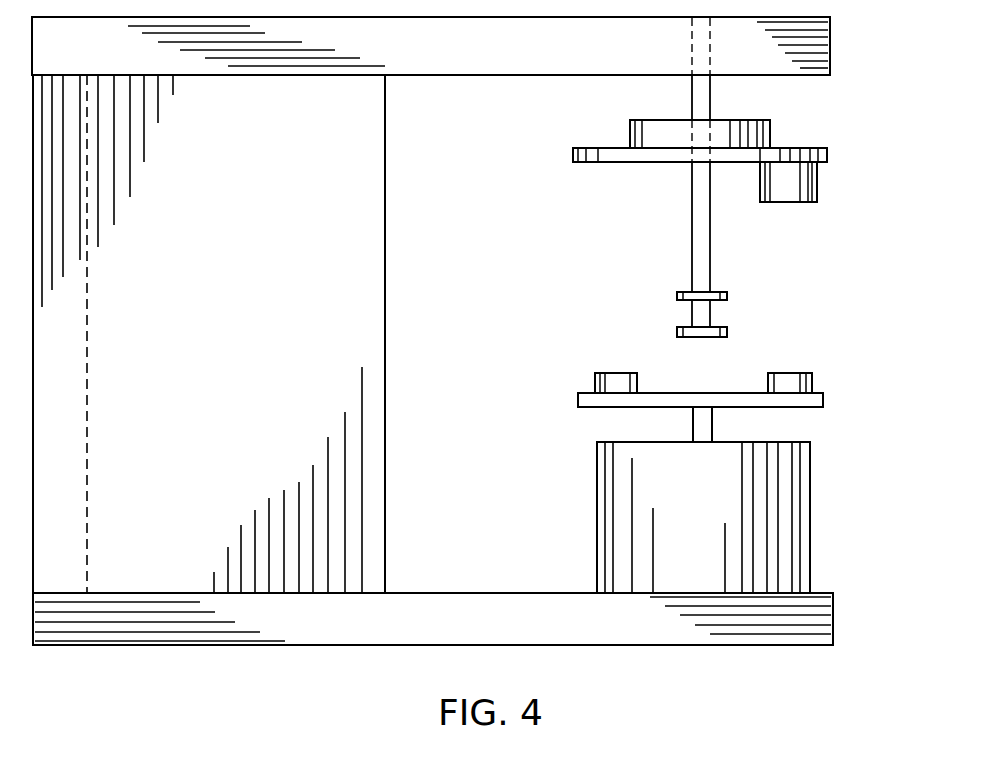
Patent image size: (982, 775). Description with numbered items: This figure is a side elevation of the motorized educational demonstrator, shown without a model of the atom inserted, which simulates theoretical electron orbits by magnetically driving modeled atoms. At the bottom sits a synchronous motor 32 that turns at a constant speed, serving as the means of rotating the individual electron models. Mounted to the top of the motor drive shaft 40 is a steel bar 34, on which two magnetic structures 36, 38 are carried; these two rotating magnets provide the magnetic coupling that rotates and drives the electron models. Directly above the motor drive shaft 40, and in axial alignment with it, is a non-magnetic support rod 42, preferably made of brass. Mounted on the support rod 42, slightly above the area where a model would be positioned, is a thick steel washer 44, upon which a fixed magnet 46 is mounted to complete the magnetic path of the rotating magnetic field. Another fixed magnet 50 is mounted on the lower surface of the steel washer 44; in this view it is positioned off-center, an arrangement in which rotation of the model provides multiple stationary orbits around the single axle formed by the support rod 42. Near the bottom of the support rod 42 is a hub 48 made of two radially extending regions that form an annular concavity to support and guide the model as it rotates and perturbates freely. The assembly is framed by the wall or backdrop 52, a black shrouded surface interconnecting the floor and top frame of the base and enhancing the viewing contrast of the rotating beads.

The synchronous motor 32 is at (632, 515).
The steel bar 34 is at (578, 398).
The magnetic structure 36 is at (617, 373).
The magnetic structure 38 is at (812, 375).
The motor drive shaft 40 is at (693, 423).
The non-magnetic support rod 42 is at (697, 92).
The thick steel washer 44 is at (573, 155).
The fixed magnet 46 is at (773, 127).
The hub 48 is at (729, 297).
The fixed magnet 50 is at (817, 181).
The backdrop 52 is at (183, 527).